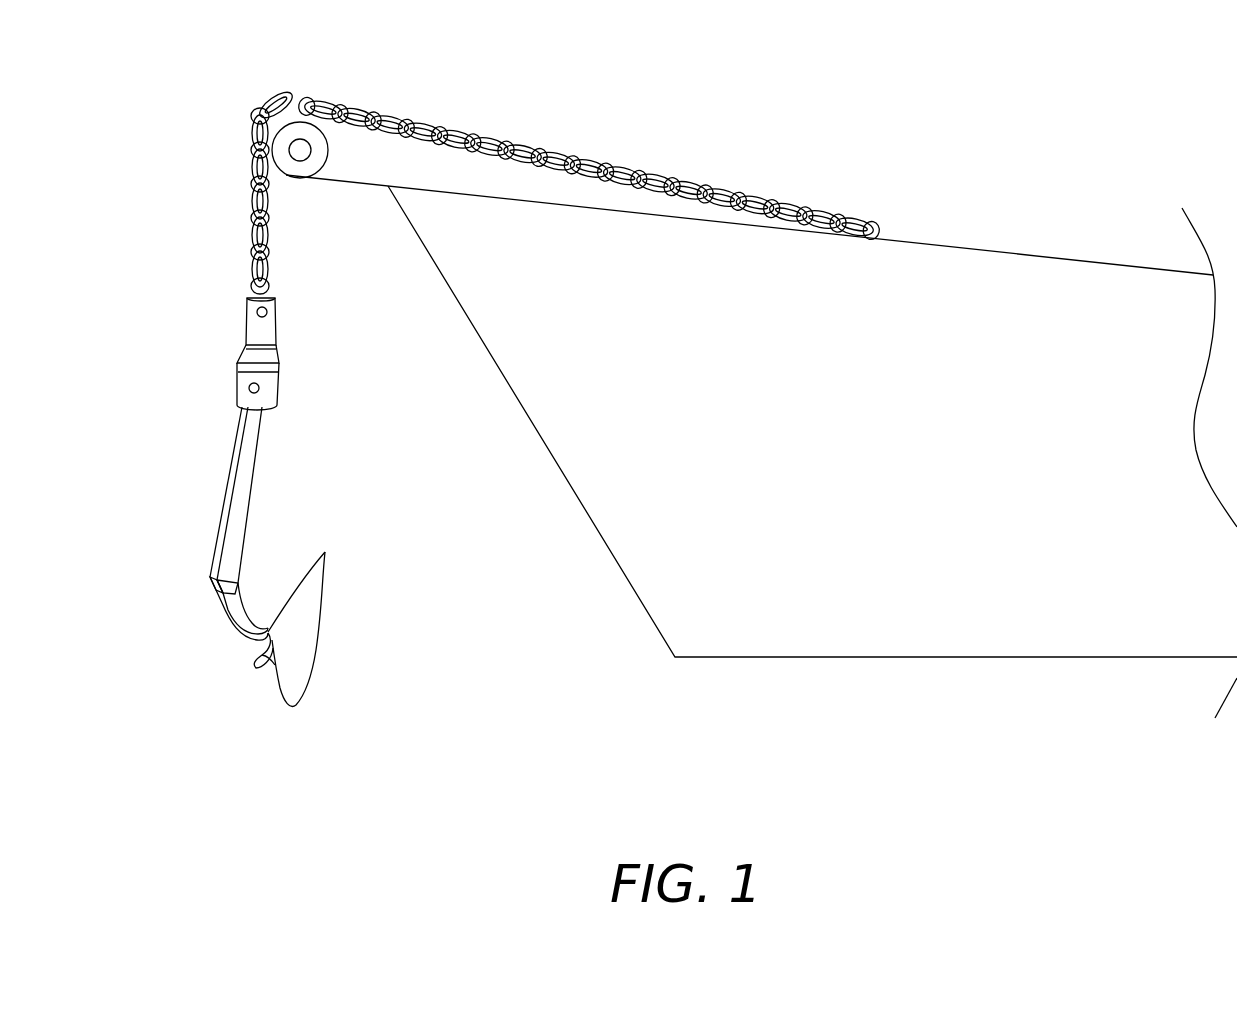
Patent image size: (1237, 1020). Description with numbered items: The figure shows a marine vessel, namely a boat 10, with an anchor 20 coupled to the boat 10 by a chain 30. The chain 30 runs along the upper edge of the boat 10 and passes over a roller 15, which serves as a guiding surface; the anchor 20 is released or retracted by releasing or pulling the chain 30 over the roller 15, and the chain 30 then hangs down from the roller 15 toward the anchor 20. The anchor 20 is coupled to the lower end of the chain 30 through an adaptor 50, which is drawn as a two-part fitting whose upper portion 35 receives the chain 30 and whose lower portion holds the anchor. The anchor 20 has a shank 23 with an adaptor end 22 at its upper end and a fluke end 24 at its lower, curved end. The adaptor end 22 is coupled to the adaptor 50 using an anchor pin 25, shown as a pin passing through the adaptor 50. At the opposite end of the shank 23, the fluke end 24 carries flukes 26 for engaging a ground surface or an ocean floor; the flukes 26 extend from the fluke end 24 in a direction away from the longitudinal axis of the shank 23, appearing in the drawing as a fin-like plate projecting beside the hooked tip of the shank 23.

The boat 10 is at (893, 434).
The roller 15 is at (315, 133).
The chain 30 is at (493, 143).
The adaptor 50 is at (265, 349).
The upper swivel body 35 is at (257, 313).
The anchor pin 25 is at (249, 390).
The anchor 20 is at (249, 531).
The adaptor end 22 is at (250, 443).
The shank 23 is at (231, 535).
The fluke end 24 is at (262, 628).
The flukes 26 is at (308, 594).